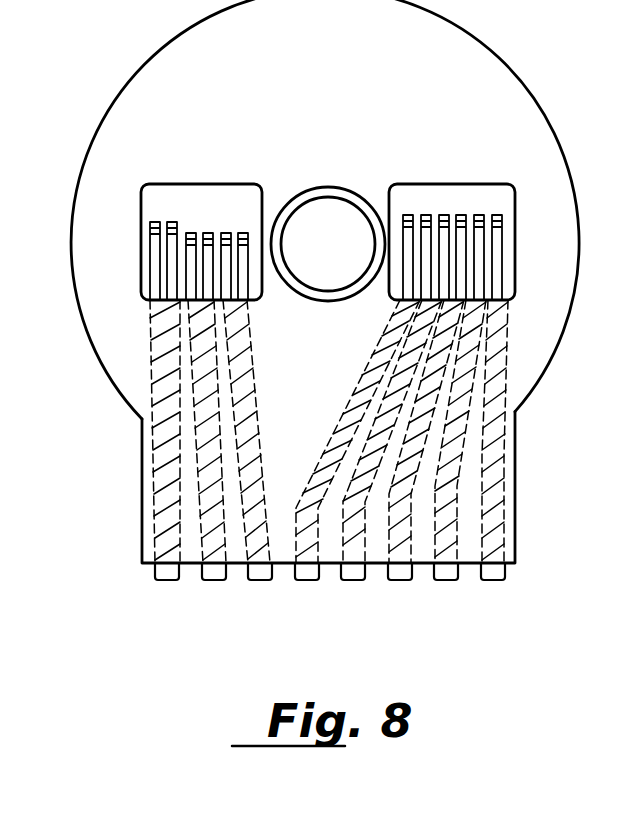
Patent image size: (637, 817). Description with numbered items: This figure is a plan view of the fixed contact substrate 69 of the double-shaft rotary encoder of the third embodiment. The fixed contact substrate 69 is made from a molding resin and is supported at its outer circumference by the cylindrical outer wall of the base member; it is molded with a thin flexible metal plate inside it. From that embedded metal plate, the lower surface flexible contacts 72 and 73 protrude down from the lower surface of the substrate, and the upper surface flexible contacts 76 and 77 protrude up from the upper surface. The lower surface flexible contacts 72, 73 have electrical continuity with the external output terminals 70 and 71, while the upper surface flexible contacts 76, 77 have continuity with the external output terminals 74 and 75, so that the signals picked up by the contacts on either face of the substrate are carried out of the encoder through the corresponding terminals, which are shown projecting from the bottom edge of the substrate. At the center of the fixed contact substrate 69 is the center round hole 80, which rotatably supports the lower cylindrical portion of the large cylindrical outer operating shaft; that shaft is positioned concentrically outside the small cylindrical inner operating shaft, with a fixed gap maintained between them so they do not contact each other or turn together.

The fixed contact substrate 69 is at (122, 363).
The external output terminal 70 is at (260, 583).
The external output terminal 71 is at (210, 578).
The lower surface flexible contact 72 is at (243, 233).
The lower surface flexible contact 73 is at (172, 222).
The external output terminal 74 is at (308, 583).
The external output terminal 75 is at (358, 580).
The upper surface flexible contact 76 is at (428, 215).
The upper surface flexible contact 77 is at (497, 215).
The center round hole 80 is at (328, 212).